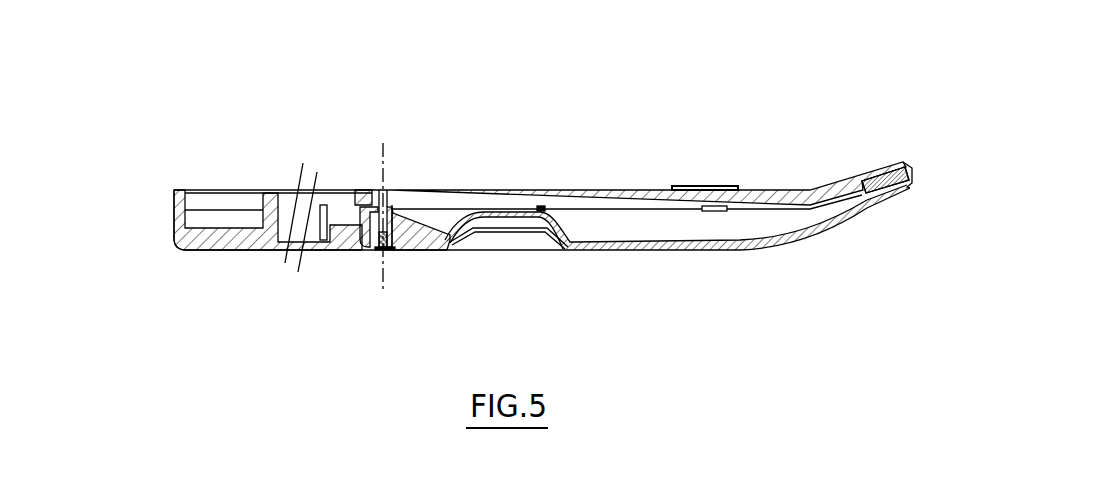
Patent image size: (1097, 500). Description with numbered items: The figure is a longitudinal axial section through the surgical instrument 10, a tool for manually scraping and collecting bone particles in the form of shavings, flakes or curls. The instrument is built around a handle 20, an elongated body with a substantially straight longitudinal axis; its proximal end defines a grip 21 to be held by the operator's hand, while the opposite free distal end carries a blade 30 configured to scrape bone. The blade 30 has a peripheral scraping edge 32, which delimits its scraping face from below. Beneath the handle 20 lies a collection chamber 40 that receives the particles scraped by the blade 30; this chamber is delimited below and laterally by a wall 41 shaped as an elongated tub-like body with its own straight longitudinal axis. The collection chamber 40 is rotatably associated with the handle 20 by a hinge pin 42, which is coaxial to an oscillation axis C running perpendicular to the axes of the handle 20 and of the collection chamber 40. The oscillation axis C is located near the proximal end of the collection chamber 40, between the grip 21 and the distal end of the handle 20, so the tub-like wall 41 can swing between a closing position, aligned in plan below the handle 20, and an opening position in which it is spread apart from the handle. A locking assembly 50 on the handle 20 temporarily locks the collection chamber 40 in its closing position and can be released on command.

The surgical instrument 10 is at (160, 93).
The grip 21 is at (230, 202).
The oscillation axis C is at (382, 172).
The hinge pin 42 is at (357, 202).
The handle 20 is at (435, 184).
The locking assembly 50 is at (714, 172).
The collection chamber 40 is at (576, 240).
The wall 41 is at (667, 252).
The blade 30 is at (907, 162).
The peripheral scraping edge 32 is at (912, 188).